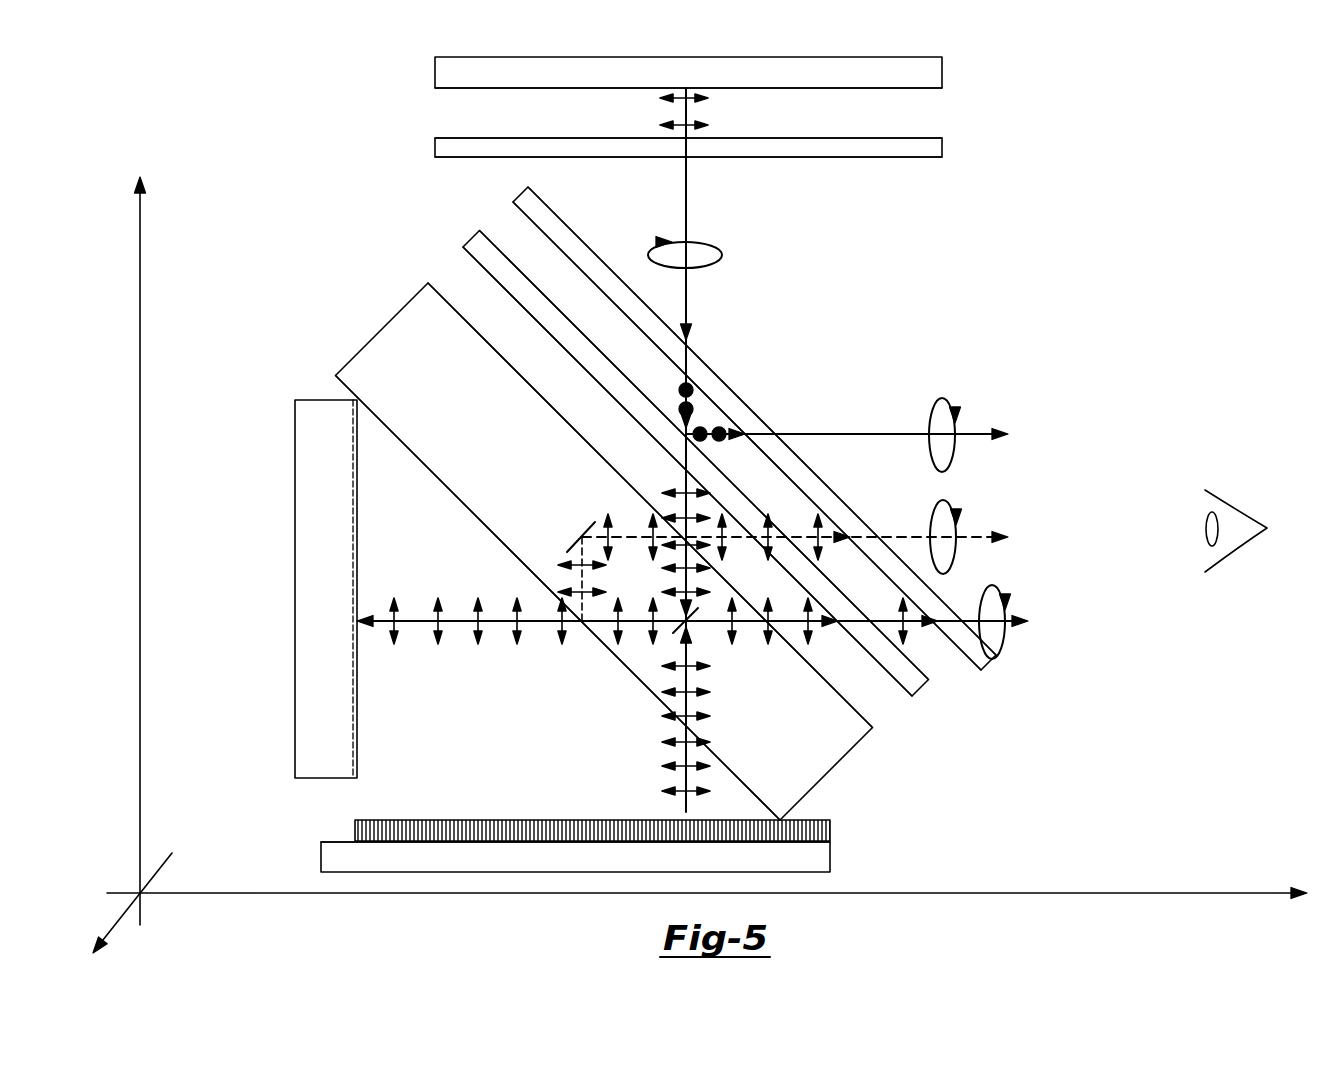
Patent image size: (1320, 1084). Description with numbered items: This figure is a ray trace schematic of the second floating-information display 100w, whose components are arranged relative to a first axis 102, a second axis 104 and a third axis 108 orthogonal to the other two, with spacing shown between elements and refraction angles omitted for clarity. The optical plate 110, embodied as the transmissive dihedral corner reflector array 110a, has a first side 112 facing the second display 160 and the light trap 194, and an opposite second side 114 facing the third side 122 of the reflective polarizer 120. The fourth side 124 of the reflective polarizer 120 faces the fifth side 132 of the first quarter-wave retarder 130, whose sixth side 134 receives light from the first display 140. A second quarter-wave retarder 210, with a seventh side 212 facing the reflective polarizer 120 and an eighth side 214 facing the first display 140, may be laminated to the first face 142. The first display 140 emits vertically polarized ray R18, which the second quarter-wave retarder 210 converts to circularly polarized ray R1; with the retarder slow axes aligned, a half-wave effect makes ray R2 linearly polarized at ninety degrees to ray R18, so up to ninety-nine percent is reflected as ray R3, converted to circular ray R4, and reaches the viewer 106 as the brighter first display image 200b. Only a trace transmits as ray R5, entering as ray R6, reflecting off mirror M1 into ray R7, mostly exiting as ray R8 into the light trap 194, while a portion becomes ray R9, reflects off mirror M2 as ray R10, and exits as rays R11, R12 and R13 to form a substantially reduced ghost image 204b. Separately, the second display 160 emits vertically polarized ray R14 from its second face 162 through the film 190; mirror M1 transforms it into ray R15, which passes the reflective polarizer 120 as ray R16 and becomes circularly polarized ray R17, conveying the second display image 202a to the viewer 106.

The second floating-information display 100w is at (339, 129).
The first axis 102 is at (122, 551).
The second axis 104 is at (707, 910).
The third axis 108 is at (130, 906).
The viewer 106 is at (1233, 518).
The optical plate 110 is at (560, 551).
The transmissive dihedral corner reflector array 110a is at (382, 329).
The first side 112 is at (480, 520).
The second side 114 is at (533, 388).
The reflective polarizer 120 is at (466, 243).
The third side 122 is at (627, 410).
The fourth side 124 is at (582, 333).
The first quarter-wave retarder 130 is at (516, 199).
The fifth side 132 is at (620, 309).
The sixth side 134 is at (620, 279).
The first display 140 is at (452, 57).
The first face 142 is at (838, 88).
The second display 160 is at (830, 861).
The second face 162 is at (338, 842).
The film 190 is at (830, 830).
The light trap 194 is at (295, 588).
The second quarter-wave retarder 210 is at (942, 147).
The seventh side 212 is at (840, 157).
The eighth side 214 is at (836, 138).
The first display image 200b is at (871, 435).
The second display image 202a is at (713, 624).
The ghost image 204b is at (819, 539).
The ray R1 is at (685, 450).
The ray R2 is at (673, 404).
The ray R3 is at (719, 448).
The ray R4 is at (961, 435).
The ray R5 is at (689, 505).
The ray R6 is at (689, 569).
The ray R7 is at (635, 624).
The ray R8 is at (478, 628).
The ray R9 is at (582, 578).
The ray R10 is at (630, 540).
The ray R11 is at (745, 540).
The ray R12 is at (833, 540).
The ray R13 is at (958, 537).
The ray R14 is at (679, 728).
The ray R15 is at (787, 625).
The ray R16 is at (922, 625).
The ray R17 is at (1006, 622).
The ray R18 is at (696, 111).
The mirror M1 is at (695, 623).
The mirror M2 is at (576, 567).